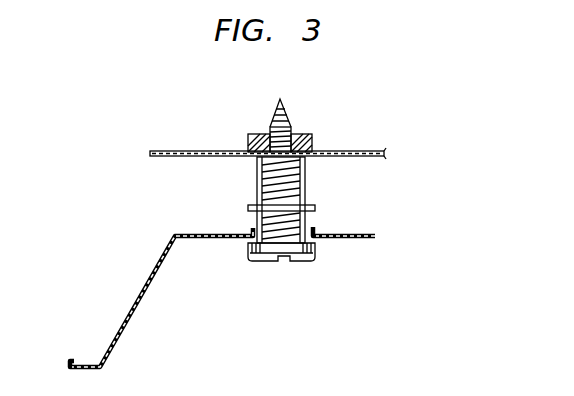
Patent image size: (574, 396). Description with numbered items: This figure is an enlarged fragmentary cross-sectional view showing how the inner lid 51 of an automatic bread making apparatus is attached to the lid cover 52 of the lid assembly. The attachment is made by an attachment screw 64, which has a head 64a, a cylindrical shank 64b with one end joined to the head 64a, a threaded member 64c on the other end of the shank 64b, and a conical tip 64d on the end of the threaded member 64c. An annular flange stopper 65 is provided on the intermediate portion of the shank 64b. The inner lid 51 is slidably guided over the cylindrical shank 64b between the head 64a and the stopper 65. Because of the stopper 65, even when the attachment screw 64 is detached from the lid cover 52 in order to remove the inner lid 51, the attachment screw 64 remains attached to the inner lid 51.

The inner lid 51 is at (137, 313).
The lid cover 52 is at (203, 150).
The attachment screw 64 is at (312, 190).
The head 64a is at (292, 262).
The cylindrical shank 64b is at (306, 170).
The threaded member 64c is at (292, 132).
The conical tip 64d is at (279, 108).
The annular flange stopper 65 is at (252, 206).